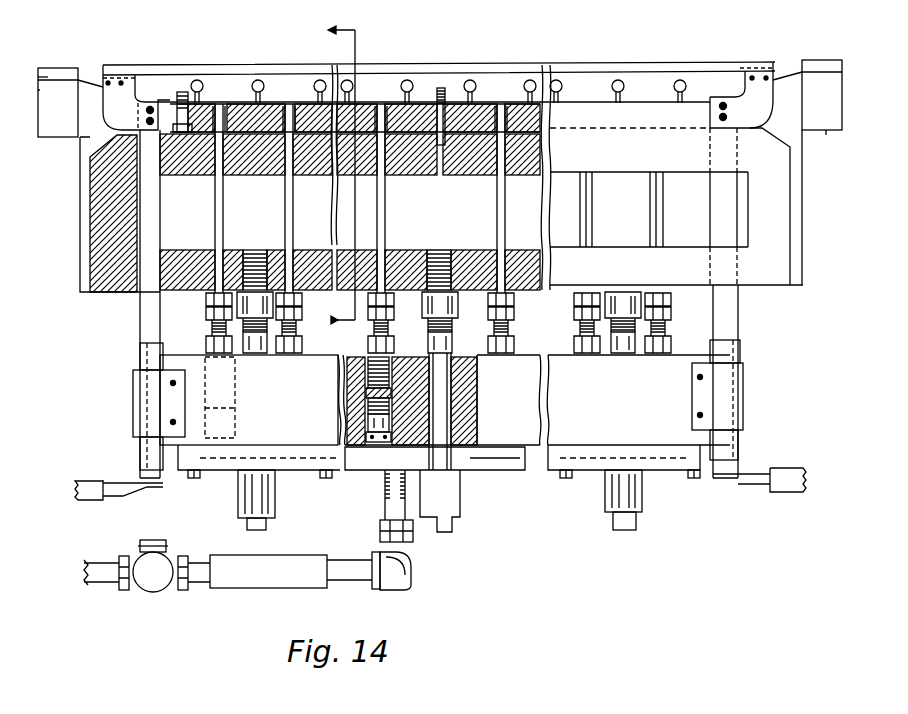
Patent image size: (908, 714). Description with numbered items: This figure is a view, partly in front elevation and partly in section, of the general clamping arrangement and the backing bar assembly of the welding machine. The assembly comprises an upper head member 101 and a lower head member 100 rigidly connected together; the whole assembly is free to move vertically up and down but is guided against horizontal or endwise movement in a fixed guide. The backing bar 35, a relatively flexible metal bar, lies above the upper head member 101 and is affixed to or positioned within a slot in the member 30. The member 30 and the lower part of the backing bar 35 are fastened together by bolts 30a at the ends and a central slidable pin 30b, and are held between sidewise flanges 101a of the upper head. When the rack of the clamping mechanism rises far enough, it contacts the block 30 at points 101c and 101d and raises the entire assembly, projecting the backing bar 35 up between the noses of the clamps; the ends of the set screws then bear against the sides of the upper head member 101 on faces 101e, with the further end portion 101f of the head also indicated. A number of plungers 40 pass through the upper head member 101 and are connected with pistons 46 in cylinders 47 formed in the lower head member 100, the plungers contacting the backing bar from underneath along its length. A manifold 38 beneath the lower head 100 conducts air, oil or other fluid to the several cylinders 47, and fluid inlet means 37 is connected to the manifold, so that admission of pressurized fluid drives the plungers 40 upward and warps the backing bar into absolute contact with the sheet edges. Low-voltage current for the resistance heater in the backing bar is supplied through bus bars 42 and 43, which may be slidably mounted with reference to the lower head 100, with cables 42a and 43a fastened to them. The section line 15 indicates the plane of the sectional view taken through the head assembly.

The block 30 is at (633, 112).
The bolts 30a is at (167, 90).
The central slidable pin 30b is at (447, 92).
The backing bar 35 is at (697, 68).
The upper head member 101 is at (676, 206).
The sidewise flanges 101a is at (20, 77).
The contact point 101c is at (53, 137).
The contact point 101d is at (830, 131).
The faces 101e is at (816, 67).
The left end connector 101f is at (48, 75).
The plungers 40 is at (397, 100).
The section line 15- 15 is at (327, 177).
The bus bar 42 is at (147, 329).
The cable 42a is at (89, 477).
The bus bar 43 is at (727, 311).
The cable 43a is at (790, 478).
The lower head member 100 is at (445, 391).
The pistons 46 is at (393, 440).
The manifold 38 is at (373, 452).
The cylinders 47 is at (390, 440).
The fluid inlet means 37 is at (97, 568).